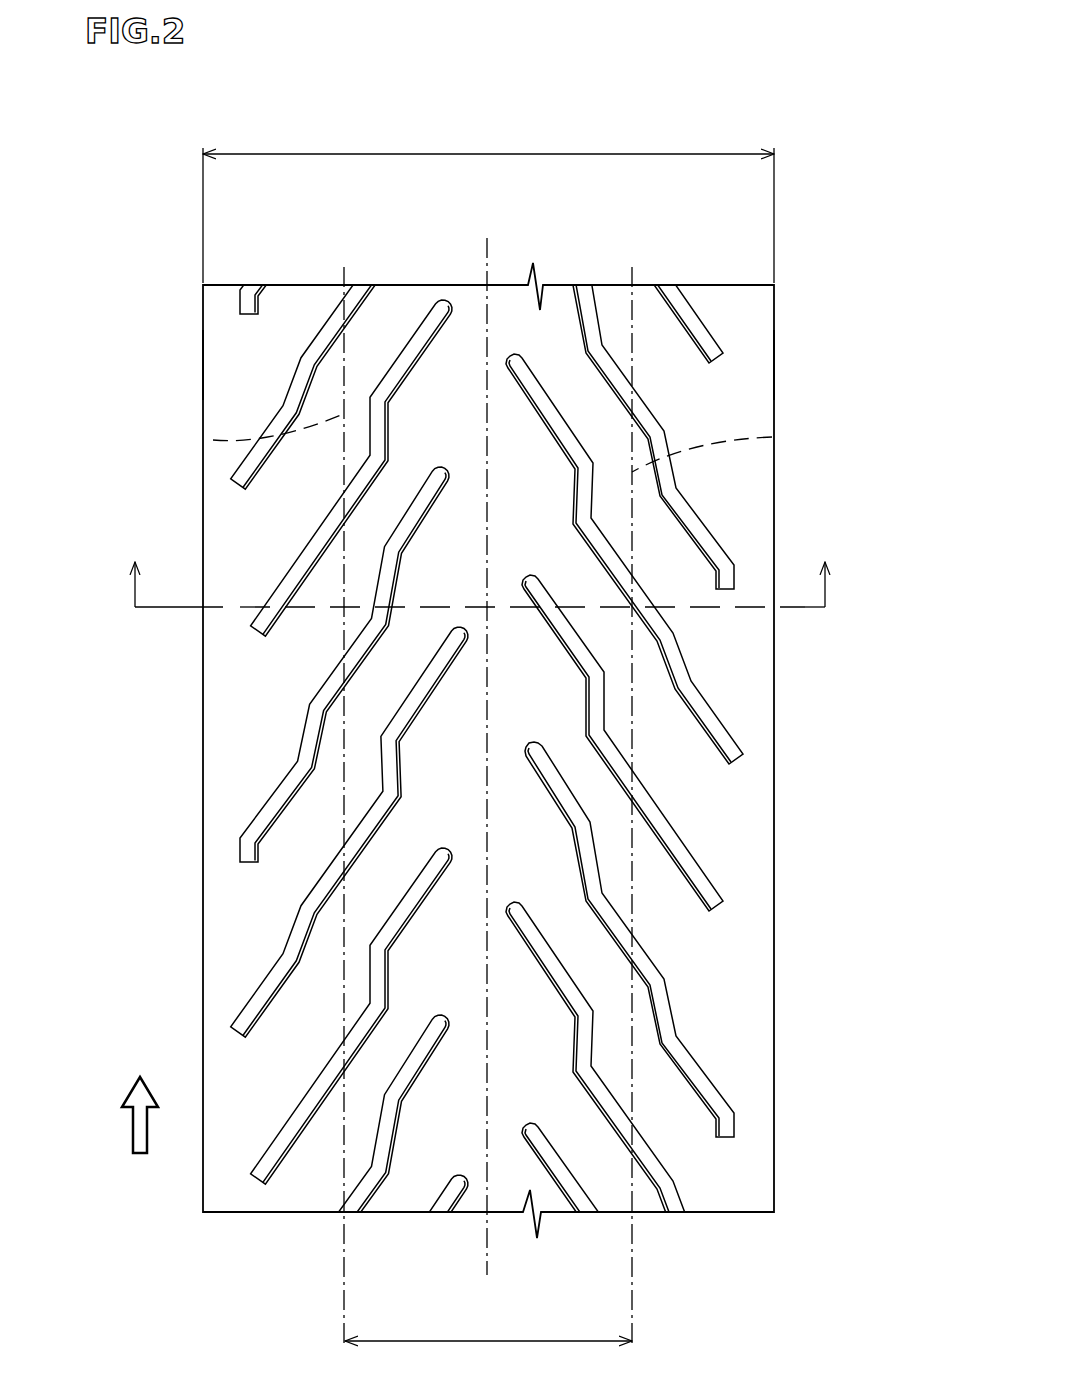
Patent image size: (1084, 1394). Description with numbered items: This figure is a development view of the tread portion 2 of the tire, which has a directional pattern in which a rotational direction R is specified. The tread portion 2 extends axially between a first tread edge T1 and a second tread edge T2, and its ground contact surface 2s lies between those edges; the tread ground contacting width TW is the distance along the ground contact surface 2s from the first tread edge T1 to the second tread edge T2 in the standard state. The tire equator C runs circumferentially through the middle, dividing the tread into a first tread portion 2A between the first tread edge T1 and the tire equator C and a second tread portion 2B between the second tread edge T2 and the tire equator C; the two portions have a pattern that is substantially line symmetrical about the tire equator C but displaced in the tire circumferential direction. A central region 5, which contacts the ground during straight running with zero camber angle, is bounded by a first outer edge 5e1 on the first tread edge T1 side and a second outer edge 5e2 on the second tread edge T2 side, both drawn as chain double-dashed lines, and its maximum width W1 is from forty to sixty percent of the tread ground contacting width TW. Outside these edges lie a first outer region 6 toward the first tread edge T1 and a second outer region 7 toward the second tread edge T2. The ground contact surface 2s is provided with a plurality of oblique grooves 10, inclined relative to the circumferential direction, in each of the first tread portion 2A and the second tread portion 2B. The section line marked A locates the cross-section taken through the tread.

The tread portion 2 is at (543, 277).
The first tread portion 2A is at (400, 312).
The second tread portion 2B is at (657, 335).
The ground contact surface 2s is at (242, 773).
The central region 5 is at (475, 317).
The first outer edge 5e1 is at (213, 440).
The second outer edge 5e2 is at (772, 437).
The first outer region 6 is at (318, 315).
The second outer region 7 is at (718, 382).
The oblique grooves 10 is at (310, 557).
The tire equator C is at (486, 743).
The tread ground contacting width TW is at (488, 204).
The maximum width of the central region W1 is at (488, 1358).
The first tread edge T1 is at (201, 364).
The second tread edge T2 is at (776, 385).
The section line A- A is at (479, 568).
The rotational direction R is at (140, 1099).